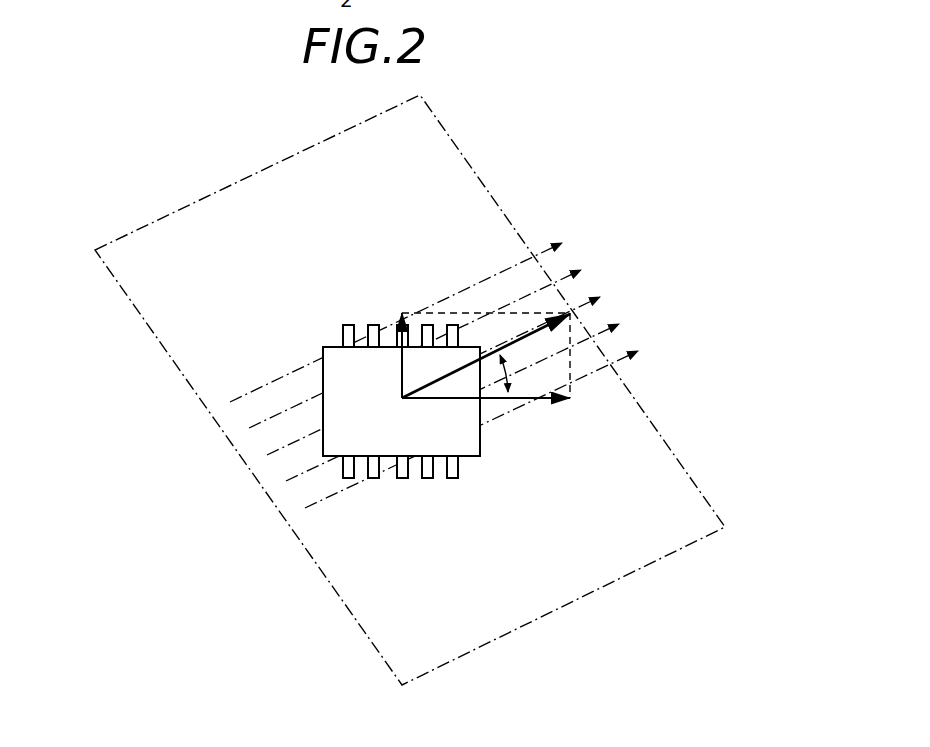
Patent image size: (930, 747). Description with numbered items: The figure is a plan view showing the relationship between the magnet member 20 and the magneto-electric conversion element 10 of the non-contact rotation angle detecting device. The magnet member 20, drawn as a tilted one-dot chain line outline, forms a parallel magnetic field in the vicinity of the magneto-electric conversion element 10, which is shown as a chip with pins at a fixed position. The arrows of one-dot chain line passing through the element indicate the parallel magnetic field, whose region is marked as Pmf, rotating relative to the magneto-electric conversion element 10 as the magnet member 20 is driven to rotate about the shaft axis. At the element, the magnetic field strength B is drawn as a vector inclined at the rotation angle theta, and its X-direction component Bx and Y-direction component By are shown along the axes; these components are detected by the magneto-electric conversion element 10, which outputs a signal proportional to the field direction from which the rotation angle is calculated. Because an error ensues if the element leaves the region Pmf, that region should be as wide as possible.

The magneto-electric conversion element 10 is at (468, 438).
The magnet member 20 is at (357, 590).
The region of the parallel magnetic field Pmf is at (270, 527).
The magnetic field strength B is at (489, 341).
The X-direction component Bx is at (504, 398).
The Y-direction component By is at (407, 341).